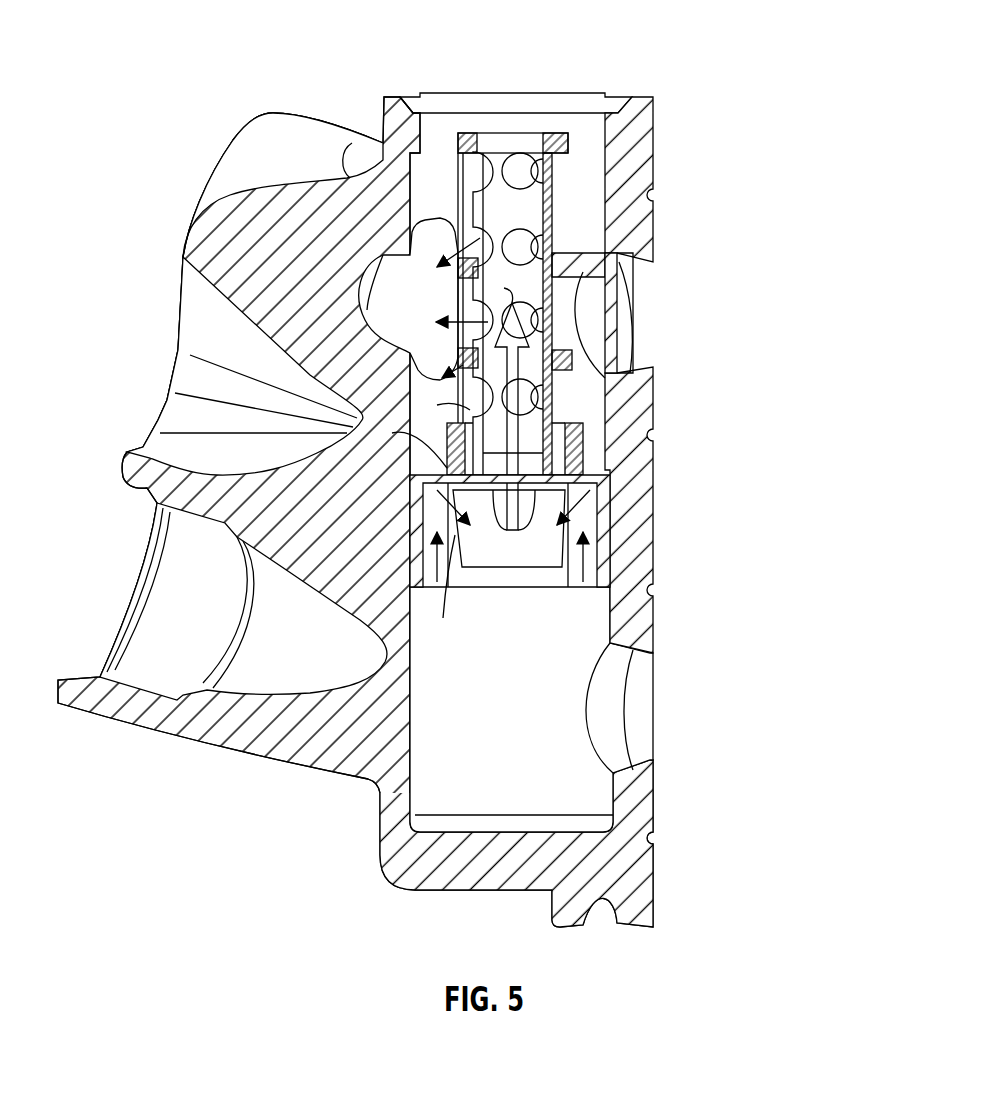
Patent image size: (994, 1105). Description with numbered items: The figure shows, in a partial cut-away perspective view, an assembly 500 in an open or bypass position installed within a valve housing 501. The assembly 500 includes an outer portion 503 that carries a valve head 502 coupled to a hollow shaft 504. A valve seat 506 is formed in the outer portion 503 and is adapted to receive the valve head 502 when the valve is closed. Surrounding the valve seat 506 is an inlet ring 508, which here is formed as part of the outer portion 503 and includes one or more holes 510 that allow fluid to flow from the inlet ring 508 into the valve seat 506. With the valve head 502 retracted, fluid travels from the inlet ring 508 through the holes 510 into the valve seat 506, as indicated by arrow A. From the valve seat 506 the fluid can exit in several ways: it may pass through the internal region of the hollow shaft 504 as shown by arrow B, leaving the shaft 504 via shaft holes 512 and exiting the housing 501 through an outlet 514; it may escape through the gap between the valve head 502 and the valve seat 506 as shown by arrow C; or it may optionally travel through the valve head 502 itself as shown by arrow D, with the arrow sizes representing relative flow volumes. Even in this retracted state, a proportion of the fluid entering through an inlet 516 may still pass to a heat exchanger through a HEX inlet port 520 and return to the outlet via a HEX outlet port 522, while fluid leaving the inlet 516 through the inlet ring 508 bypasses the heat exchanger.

The assembly 500 is at (435, 463).
The valve housing 501 is at (383, 122).
The valve head 502 is at (573, 432).
The outer portion 503 is at (607, 268).
The hollow shaft 504 is at (584, 281).
The valve seat 506 is at (500, 548).
The inlet ring 508 is at (588, 503).
The holes 510 is at (553, 517).
The shaft holes 512 is at (523, 169).
The outlet 514 is at (410, 298).
The inlet 516 is at (185, 590).
The HEX inlet port 520 is at (618, 692).
The HEX outlet port 522 is at (633, 357).